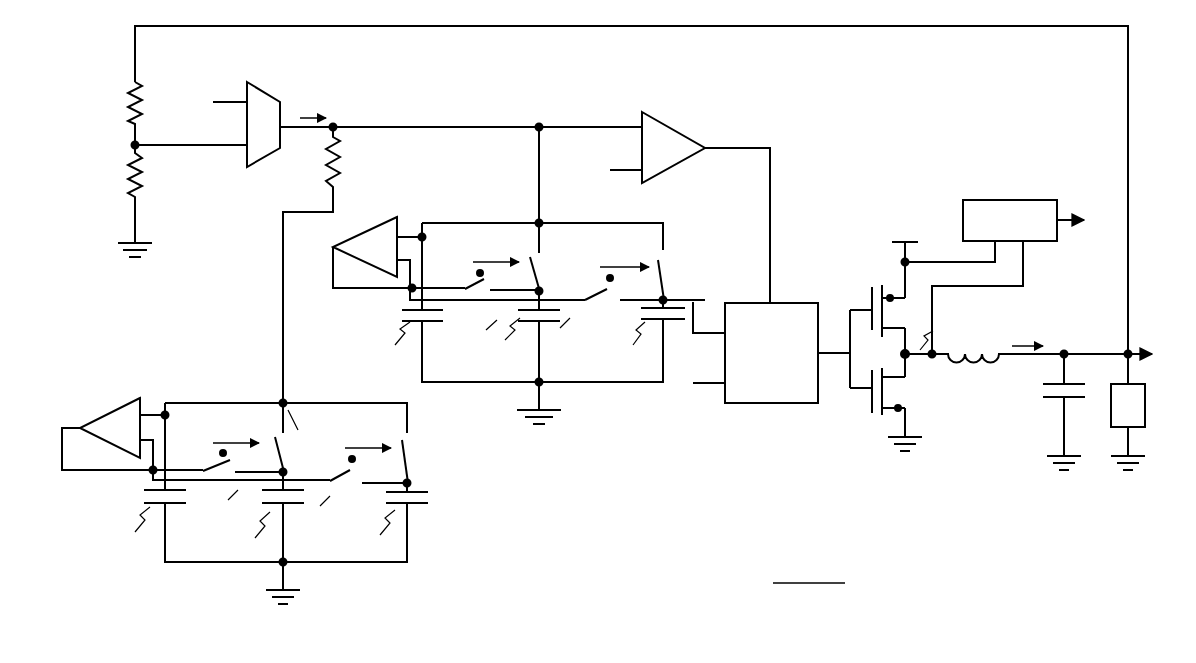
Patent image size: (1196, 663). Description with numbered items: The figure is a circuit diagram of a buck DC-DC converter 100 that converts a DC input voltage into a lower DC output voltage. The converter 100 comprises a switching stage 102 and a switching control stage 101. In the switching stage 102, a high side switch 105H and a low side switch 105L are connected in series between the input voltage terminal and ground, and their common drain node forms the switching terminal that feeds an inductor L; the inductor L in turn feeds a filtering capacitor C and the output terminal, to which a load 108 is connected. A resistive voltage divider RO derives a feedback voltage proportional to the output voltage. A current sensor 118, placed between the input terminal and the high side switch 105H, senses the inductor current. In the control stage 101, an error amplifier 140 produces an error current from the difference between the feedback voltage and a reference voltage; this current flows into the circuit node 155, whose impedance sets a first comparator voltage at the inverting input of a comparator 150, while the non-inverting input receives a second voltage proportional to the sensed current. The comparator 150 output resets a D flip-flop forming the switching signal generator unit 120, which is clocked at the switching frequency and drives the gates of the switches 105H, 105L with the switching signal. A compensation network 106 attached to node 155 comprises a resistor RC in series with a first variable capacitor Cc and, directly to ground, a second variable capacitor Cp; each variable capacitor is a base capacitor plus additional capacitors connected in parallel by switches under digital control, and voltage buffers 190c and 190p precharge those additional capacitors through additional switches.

The DC-DC converter 100 is at (1110, 523).
The controller 101 is at (832, 168).
The switching stage 102 is at (952, 472).
The high side switch 105H is at (912, 313).
The low side switch 105L is at (908, 397).
The adaptive compensation network 106 is at (577, 510).
The load 108 is at (1147, 428).
The current sensor 118 is at (1005, 198).
The switching signal generator unit 120 is at (772, 405).
The error amplifier 140 is at (283, 97).
The comparator 150 is at (688, 120).
The circuit node 155 is at (445, 123).
The voltage buffer 190p is at (362, 266).
The voltage buffer 190c is at (113, 407).
The output resistor divider RO is at (163, 198).
The compensation resistor RC is at (344, 171).
The second variable capacitor Cp is at (625, 400).
The first variable capacitor Cc is at (105, 576).
The filtering capacitor C is at (1046, 396).
The inductor L is at (968, 343).